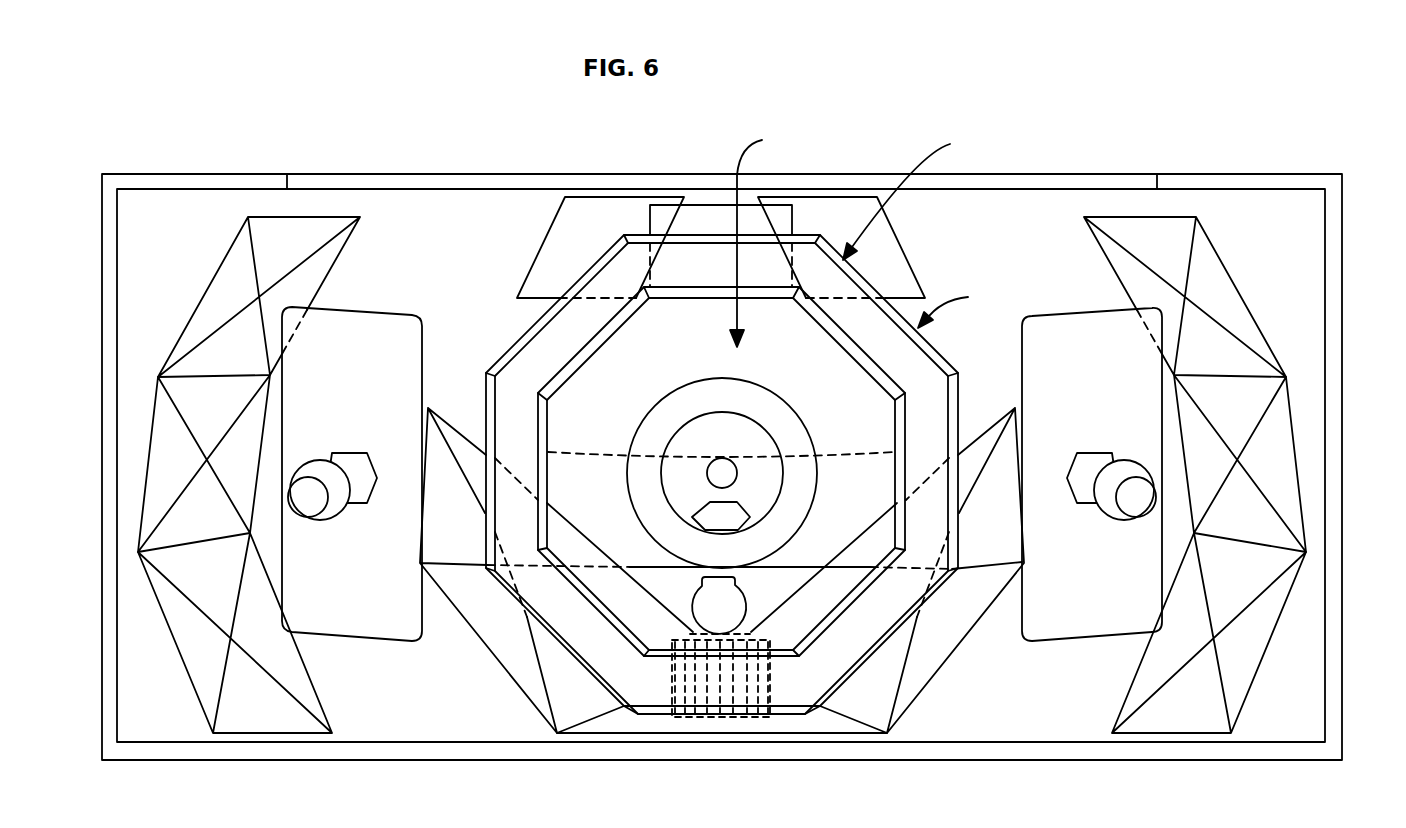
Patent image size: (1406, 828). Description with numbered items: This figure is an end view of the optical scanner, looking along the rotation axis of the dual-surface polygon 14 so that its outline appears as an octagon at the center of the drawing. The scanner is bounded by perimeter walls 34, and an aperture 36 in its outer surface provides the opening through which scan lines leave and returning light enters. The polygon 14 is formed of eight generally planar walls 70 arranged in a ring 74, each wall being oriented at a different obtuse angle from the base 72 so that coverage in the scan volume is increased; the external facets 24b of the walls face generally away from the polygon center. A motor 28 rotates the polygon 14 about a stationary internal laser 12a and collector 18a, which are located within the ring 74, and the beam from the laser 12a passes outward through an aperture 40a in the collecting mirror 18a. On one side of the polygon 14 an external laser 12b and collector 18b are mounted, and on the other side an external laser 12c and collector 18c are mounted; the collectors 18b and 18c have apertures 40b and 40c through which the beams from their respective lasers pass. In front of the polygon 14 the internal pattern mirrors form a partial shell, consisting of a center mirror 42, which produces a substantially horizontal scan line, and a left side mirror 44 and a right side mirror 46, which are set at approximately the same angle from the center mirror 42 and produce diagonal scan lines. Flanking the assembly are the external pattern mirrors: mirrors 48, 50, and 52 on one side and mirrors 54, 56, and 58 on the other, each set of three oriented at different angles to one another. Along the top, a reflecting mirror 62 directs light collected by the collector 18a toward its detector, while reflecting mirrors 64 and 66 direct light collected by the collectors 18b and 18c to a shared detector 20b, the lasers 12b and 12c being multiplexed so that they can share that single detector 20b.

The internal laser 12a is at (738, 607).
The external laser 12b is at (308, 507).
The external laser 12c is at (1110, 521).
The dual-surface polygon 14 is at (516, 342).
The collector 18a is at (842, 460).
The collector 18b is at (366, 317).
The collector 18c is at (1085, 317).
The detector 20b is at (728, 718).
The external facets 24b is at (915, 362).
The motor 28 is at (715, 425).
The perimeter walls 34 is at (102, 303).
The aperture 36 is at (1097, 174).
The aperture 40a is at (698, 522).
The aperture 40b is at (358, 452).
The aperture 40c is at (1086, 452).
The center mirror 42 is at (638, 733).
The left side mirror 44 is at (460, 437).
The right side mirror 46 is at (984, 437).
The mirror 48 is at (216, 274).
The mirror 50 is at (152, 427).
The mirror 52 is at (163, 603).
The mirror 54 is at (1223, 282).
The mirror 56 is at (1291, 425).
The mirror 58 is at (1278, 620).
The reflecting mirror 62 is at (717, 213).
The reflecting mirror 64 is at (590, 205).
The reflecting mirror 66 is at (830, 200).
The planar walls 70 is at (959, 307).
The base 72 is at (763, 236).
The ring 74 is at (915, 193).